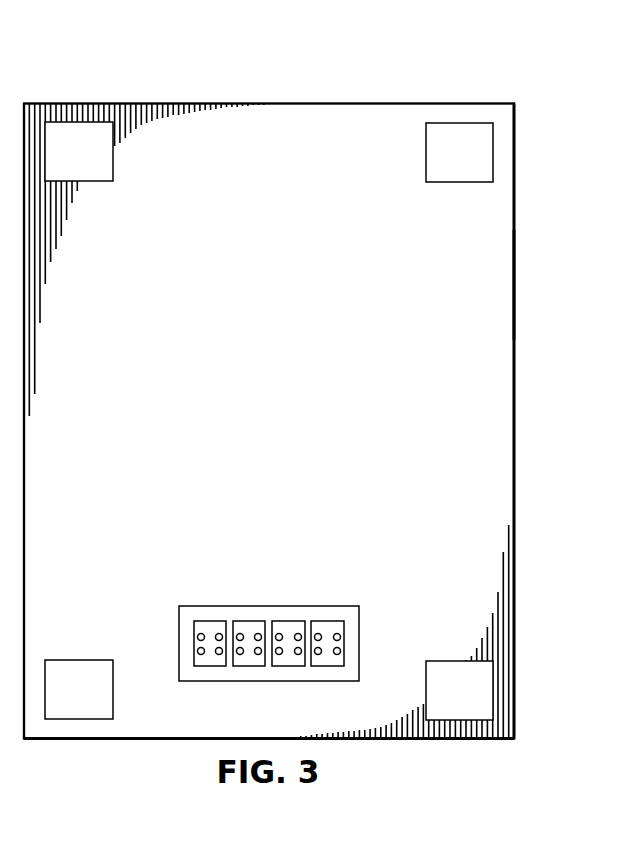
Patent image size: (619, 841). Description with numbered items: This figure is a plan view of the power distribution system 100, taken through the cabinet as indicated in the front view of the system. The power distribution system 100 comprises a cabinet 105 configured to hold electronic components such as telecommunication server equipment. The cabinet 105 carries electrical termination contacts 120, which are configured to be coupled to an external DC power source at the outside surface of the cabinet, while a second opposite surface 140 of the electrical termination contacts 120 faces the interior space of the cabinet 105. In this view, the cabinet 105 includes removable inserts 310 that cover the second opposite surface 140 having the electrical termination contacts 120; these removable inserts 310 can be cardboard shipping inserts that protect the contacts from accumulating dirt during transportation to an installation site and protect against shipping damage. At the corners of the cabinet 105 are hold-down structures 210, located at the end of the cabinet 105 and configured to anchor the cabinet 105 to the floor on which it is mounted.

The power distribution system 100 is at (376, 77).
The cabinet 105 is at (515, 288).
The hold-down structures 210 is at (60, 164).
The removable inserts 310 is at (350, 637).
The second opposite surface 140 is at (213, 623).
The electrical termination contacts 120 is at (212, 666).